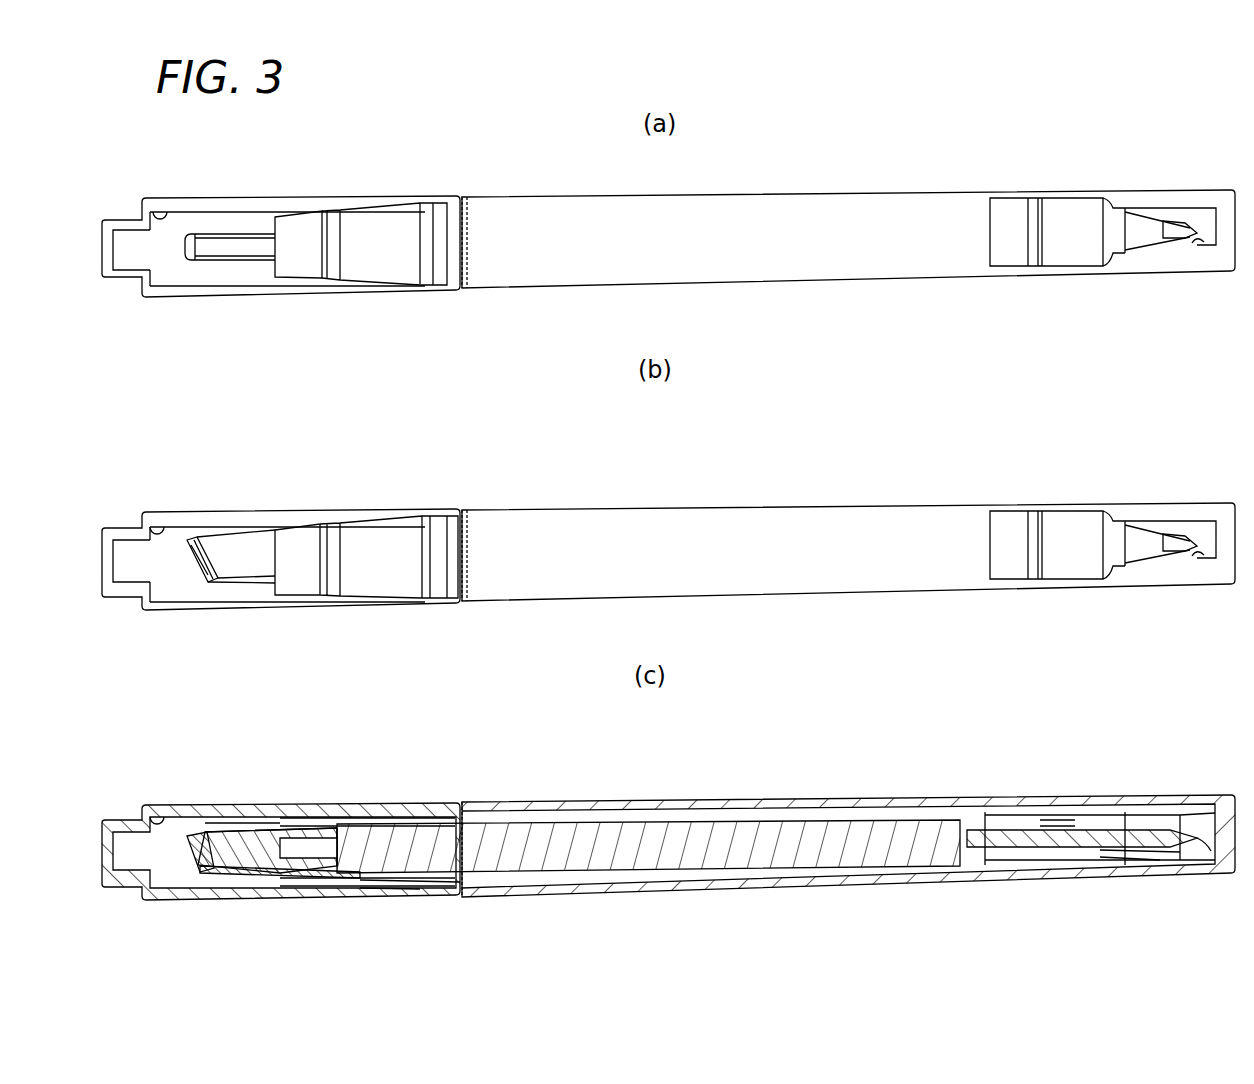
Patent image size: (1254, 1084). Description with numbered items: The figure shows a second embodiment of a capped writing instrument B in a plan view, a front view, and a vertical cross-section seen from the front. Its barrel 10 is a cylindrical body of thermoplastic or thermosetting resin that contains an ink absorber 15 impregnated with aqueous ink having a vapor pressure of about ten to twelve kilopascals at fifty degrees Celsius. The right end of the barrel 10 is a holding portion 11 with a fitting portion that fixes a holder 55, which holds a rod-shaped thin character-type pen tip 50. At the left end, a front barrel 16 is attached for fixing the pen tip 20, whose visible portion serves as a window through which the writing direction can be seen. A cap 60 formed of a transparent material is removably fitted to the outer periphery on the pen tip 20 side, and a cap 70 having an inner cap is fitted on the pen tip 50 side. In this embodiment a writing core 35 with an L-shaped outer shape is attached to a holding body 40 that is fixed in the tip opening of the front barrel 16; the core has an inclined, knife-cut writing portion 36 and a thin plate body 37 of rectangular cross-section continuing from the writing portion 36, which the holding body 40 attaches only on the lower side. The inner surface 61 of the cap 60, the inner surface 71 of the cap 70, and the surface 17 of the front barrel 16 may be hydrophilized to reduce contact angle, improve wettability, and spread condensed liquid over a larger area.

The barrel 10 is at (602, 213).
The holding portion 11 is at (1055, 820).
The ink absorber 15 is at (672, 855).
The front barrel 16 is at (462, 195).
The surface of the front barrel 17 is at (318, 815).
The pen tip 20 is at (257, 269).
The writing core 35 is at (265, 570).
The writing portion 36 is at (186, 248).
The thin plate body 37 is at (362, 882).
The holding body 40 is at (246, 211).
The pen tip 50 is at (1176, 205).
The holder 55 is at (1130, 860).
The cap 60 is at (200, 210).
The inner surface of the cap 61 is at (158, 216).
The cap 70 is at (1092, 190).
The inner surface of the cap 71 is at (1200, 244).
The writing instrument B is at (753, 189).